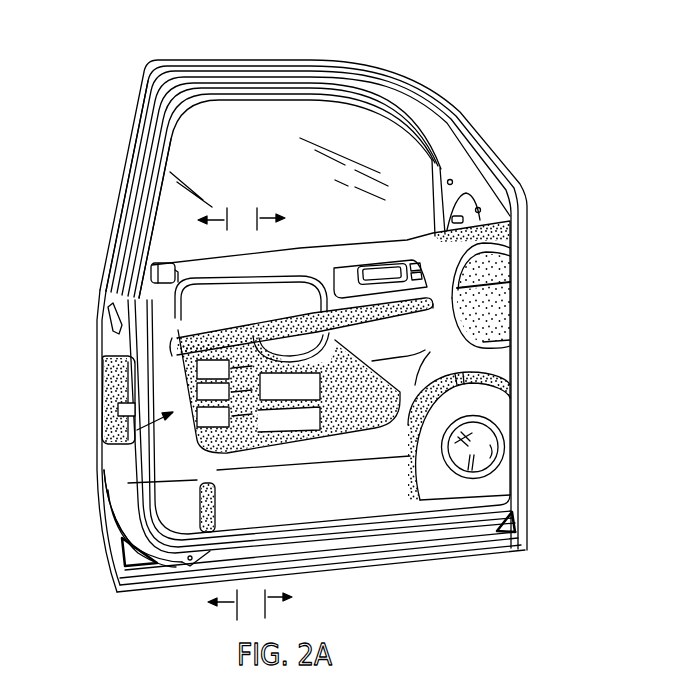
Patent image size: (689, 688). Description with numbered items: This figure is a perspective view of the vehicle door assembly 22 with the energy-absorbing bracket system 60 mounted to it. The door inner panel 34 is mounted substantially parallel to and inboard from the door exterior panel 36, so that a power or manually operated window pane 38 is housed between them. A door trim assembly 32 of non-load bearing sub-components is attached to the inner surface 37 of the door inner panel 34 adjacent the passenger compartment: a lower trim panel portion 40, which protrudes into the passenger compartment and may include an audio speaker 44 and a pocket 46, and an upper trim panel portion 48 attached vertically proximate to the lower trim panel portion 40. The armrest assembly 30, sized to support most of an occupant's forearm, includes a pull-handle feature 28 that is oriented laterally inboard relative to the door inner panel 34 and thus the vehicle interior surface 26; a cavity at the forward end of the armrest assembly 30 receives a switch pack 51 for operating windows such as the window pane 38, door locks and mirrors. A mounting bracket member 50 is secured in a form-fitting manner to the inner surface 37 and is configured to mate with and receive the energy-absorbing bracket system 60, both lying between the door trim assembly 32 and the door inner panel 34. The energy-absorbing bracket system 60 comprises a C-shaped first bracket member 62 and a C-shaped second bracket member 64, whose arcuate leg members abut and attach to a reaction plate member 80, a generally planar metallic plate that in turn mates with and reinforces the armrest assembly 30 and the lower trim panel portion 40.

The vehicle door assembly 22 is at (479, 124).
The vehicle interior surface 26 is at (319, 377).
The pull-handle feature 28 is at (291, 318).
The armrest assembly 30 is at (358, 265).
The door trim assembly 32 is at (301, 330).
The door inner panel 34 is at (145, 140).
The door exterior panel 36 is at (125, 135).
The inner surface 37 is at (110, 313).
The window pane 38 is at (367, 137).
The lower trim panel portion 40 is at (490, 322).
The audio speaker 44 is at (480, 437).
The pocket 46 is at (405, 390).
The upper trim panel portion 48 is at (483, 259).
The mounting bracket member 50 is at (227, 322).
The switch pack 51 is at (405, 258).
The energy-absorbing bracket system 60 is at (112, 430).
The first bracket member 62 is at (178, 394).
The second bracket member 64 is at (104, 510).
The reaction plate member 80 is at (157, 460).